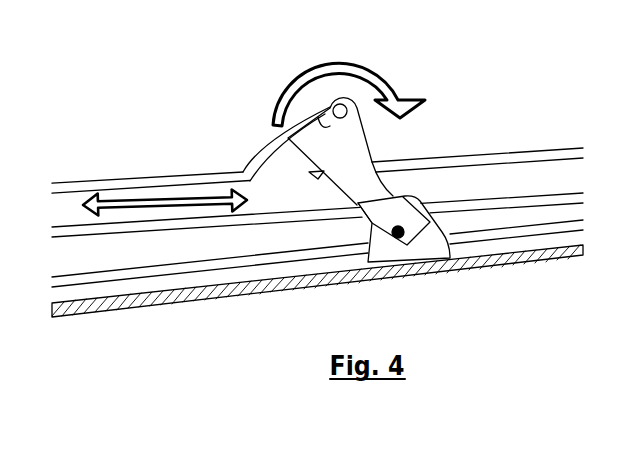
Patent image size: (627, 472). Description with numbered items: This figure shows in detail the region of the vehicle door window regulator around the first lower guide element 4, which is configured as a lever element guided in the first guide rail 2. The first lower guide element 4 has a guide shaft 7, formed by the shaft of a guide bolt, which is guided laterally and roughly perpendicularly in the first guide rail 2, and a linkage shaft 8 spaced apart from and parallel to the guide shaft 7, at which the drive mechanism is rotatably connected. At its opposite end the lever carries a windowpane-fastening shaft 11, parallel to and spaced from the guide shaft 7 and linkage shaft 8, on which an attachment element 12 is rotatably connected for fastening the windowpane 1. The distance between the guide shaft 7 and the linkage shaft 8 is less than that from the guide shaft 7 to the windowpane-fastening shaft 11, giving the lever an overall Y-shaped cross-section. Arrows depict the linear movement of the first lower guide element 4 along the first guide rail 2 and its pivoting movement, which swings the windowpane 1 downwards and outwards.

The windowpane 1 is at (271, 289).
The first guide rail 2 is at (476, 153).
The first lower guide element 4 is at (359, 143).
The guide shaft 7 is at (282, 140).
The linkage shaft 8 is at (330, 103).
The windowpane-fastening shaft 11 is at (410, 254).
The attachment element 12 is at (447, 252).